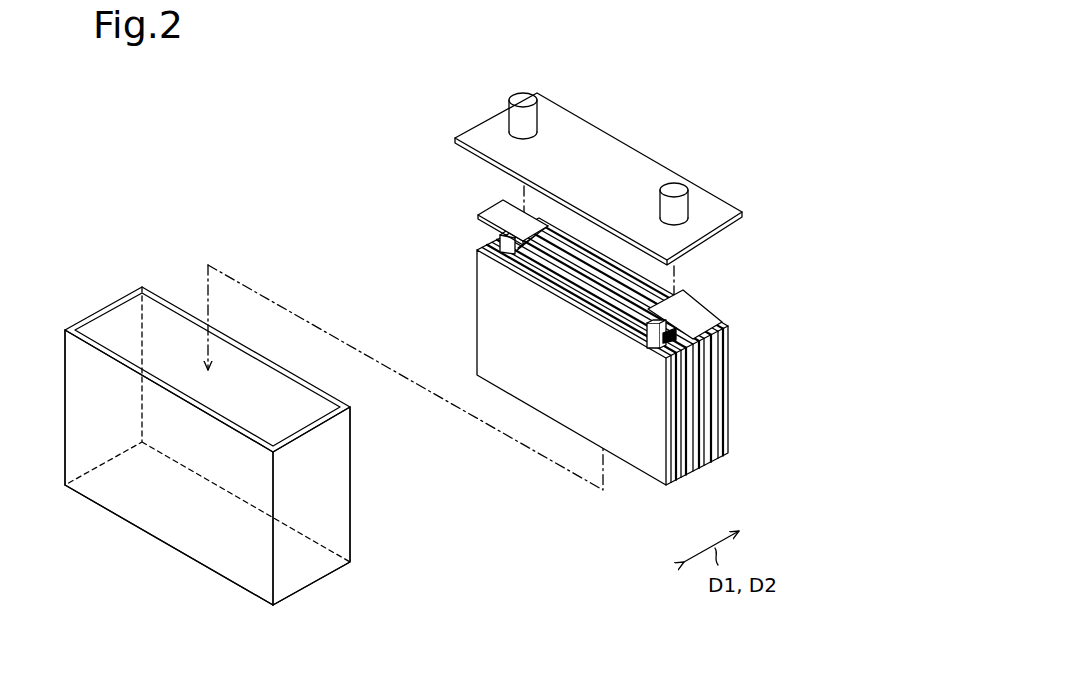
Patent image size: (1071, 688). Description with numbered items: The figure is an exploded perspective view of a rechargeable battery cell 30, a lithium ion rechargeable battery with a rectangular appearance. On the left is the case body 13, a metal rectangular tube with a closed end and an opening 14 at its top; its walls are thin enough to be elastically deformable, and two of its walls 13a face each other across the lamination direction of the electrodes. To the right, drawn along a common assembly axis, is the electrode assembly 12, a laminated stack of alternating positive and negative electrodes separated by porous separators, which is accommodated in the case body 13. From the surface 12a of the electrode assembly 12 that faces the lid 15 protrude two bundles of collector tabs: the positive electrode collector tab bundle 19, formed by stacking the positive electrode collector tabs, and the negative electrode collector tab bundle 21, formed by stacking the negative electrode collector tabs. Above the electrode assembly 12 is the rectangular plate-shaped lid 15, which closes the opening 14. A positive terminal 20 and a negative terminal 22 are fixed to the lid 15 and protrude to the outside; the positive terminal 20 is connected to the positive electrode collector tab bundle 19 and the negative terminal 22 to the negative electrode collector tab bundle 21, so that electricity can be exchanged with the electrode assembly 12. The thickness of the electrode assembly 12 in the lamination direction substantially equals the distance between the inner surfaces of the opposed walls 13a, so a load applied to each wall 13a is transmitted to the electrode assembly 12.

The rechargeable battery cell 30 is at (330, 163).
The electrode assembly 12 is at (738, 322).
The surface facing the lid 12a is at (500, 237).
The case body 13 is at (332, 578).
The walls 13a is at (282, 368).
The opening 14 is at (100, 326).
The lid 15 is at (708, 190).
The positive electrode collector tab bundle 19 is at (507, 254).
The positive terminal 20 is at (493, 97).
The negative electrode collector tab bundle 21 is at (637, 345).
The negative terminal 22 is at (645, 183).